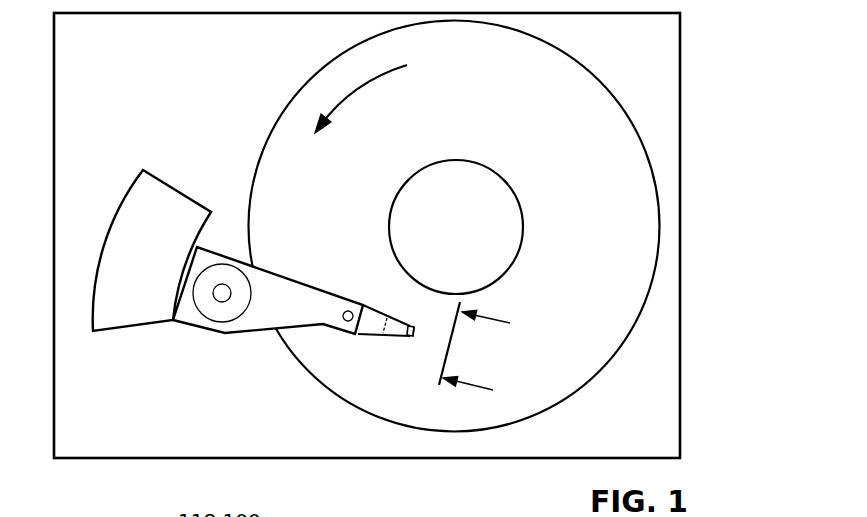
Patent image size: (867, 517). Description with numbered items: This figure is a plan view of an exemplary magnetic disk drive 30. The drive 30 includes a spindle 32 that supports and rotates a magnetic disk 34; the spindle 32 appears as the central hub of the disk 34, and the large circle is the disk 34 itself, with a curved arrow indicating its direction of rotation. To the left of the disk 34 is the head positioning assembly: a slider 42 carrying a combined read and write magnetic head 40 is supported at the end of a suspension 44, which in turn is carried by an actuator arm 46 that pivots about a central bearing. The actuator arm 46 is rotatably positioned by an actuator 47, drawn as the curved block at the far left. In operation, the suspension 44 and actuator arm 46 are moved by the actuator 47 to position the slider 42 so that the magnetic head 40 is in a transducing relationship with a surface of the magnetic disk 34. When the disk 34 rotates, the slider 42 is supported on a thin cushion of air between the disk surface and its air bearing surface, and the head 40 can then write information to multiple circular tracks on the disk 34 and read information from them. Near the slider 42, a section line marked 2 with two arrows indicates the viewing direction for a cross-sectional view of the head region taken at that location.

The magnetic disk drive 30 is at (699, 47).
The spindle 32 is at (493, 171).
The magnetic disk 34 is at (602, 249).
The magnetic head 40 is at (415, 338).
The slider 42 is at (412, 327).
The suspension 44 is at (372, 335).
The actuator arm 46 is at (312, 295).
The actuator 47 is at (185, 200).
The section line 2- 2 is at (485, 356).